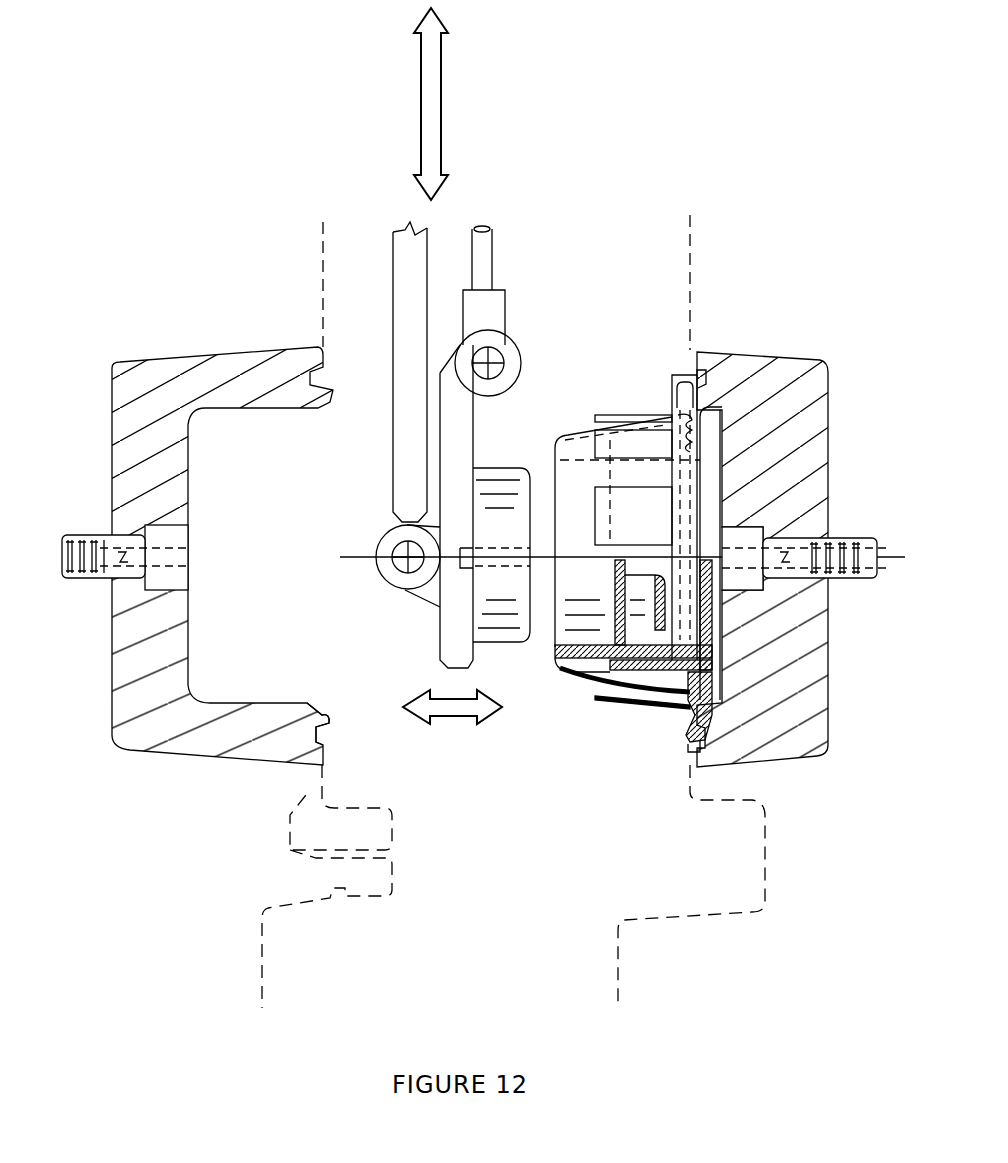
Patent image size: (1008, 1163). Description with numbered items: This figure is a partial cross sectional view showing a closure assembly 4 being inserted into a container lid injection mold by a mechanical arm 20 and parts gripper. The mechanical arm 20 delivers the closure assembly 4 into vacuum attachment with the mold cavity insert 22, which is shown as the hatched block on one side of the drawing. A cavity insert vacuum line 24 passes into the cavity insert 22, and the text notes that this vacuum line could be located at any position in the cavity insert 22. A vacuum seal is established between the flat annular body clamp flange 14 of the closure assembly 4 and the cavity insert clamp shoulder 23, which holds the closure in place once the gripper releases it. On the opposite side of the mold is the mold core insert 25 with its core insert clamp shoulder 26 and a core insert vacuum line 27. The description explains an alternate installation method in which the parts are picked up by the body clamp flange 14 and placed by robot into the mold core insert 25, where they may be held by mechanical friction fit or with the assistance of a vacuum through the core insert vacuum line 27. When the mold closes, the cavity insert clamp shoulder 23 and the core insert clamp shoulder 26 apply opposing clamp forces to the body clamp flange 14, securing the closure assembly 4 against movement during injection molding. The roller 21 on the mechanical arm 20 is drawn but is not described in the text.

The closure assembly 4 is at (637, 405).
The body clamp flange 14 is at (693, 718).
The mechanical arm 20 is at (403, 308).
The roller 21 is at (505, 492).
The mold cavity insert 22 is at (765, 372).
The cavity insert clamp shoulder 23 is at (703, 722).
The cavity insert vacuum line 24 is at (800, 570).
The mold core insert 25 is at (167, 375).
The core insert clamp shoulder 26 is at (330, 723).
The core insert vacuum line 27 is at (110, 558).